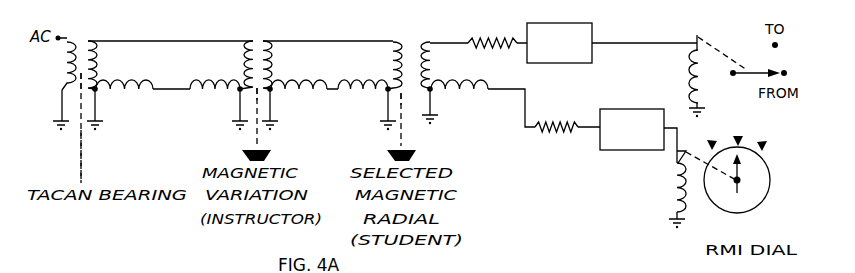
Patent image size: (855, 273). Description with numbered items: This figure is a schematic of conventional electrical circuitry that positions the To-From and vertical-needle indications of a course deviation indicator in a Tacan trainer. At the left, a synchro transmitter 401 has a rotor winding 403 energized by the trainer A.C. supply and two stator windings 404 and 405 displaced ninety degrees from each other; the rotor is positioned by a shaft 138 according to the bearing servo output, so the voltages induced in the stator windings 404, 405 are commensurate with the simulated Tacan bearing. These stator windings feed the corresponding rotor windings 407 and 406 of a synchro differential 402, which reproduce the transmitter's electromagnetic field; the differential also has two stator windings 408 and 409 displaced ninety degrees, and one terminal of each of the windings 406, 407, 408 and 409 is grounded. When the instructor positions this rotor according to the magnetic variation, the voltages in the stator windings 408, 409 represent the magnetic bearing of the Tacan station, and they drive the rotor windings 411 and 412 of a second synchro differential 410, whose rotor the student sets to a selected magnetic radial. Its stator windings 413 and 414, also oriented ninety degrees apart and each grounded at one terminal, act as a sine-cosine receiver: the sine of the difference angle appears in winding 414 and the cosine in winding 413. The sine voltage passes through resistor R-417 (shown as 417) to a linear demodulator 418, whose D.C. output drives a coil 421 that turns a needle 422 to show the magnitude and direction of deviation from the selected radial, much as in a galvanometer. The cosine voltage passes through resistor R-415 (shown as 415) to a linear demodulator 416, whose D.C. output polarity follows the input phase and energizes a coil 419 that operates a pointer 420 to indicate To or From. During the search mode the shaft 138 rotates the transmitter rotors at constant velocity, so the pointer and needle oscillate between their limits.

The synchro transmitter 401 is at (90, 31).
The synchro differential 402 is at (282, 32).
The rotor winding 403 is at (68, 70).
The stator winding 404 is at (90, 57).
The stator winding 405 is at (120, 92).
The rotor winding 406 is at (191, 92).
The rotor winding 407 is at (247, 56).
The stator winding 408 is at (268, 65).
The stator winding 409 is at (295, 93).
The synchro differential 410 is at (424, 32).
The rotor winding 411 is at (388, 70).
The rotor winding 412 is at (346, 92).
The stator winding 413 is at (430, 66).
The stator winding 414 is at (488, 92).
The resistor R- 415 is at (470, 40).
The linear demodulator 416 is at (559, 43).
The resistor R- 417 is at (582, 113).
The linear demodulator 418 is at (632, 129).
The coil 419 is at (690, 88).
The pointer 420 is at (752, 76).
The coil 421 is at (676, 200).
The needle 422 is at (745, 174).
The shaft 138 is at (82, 147).